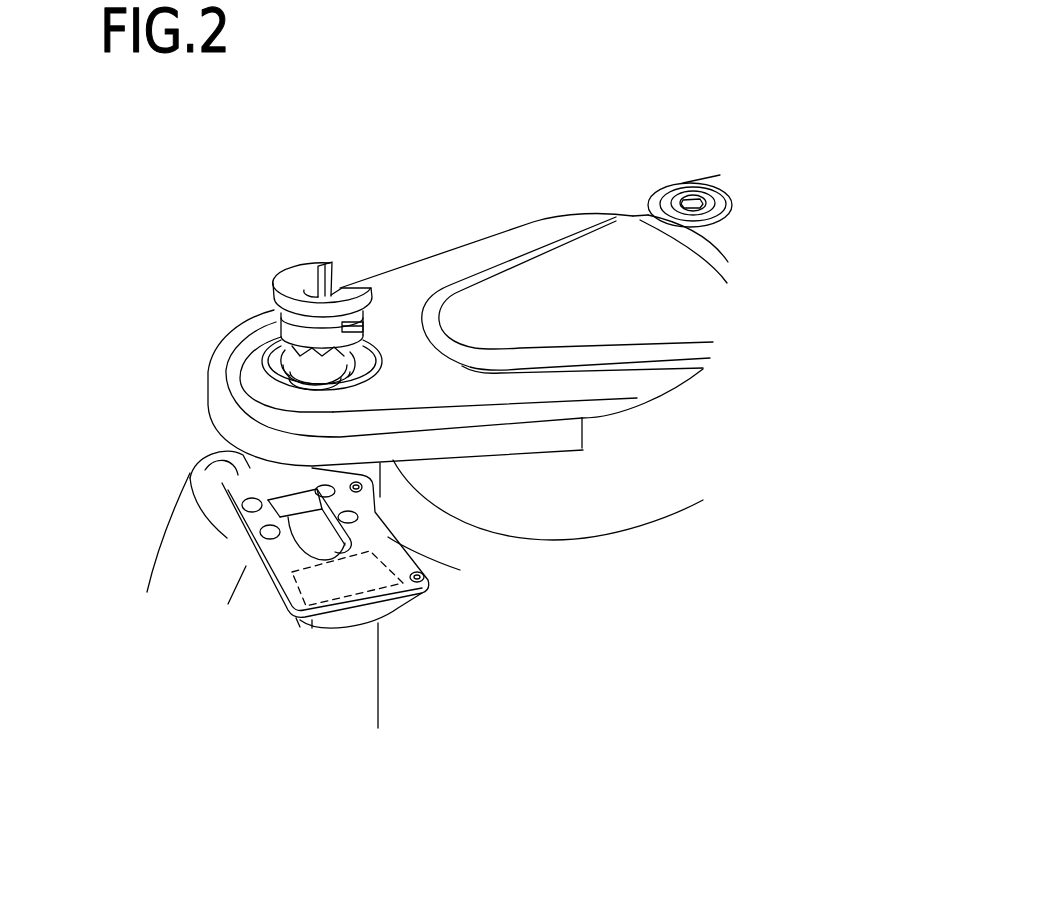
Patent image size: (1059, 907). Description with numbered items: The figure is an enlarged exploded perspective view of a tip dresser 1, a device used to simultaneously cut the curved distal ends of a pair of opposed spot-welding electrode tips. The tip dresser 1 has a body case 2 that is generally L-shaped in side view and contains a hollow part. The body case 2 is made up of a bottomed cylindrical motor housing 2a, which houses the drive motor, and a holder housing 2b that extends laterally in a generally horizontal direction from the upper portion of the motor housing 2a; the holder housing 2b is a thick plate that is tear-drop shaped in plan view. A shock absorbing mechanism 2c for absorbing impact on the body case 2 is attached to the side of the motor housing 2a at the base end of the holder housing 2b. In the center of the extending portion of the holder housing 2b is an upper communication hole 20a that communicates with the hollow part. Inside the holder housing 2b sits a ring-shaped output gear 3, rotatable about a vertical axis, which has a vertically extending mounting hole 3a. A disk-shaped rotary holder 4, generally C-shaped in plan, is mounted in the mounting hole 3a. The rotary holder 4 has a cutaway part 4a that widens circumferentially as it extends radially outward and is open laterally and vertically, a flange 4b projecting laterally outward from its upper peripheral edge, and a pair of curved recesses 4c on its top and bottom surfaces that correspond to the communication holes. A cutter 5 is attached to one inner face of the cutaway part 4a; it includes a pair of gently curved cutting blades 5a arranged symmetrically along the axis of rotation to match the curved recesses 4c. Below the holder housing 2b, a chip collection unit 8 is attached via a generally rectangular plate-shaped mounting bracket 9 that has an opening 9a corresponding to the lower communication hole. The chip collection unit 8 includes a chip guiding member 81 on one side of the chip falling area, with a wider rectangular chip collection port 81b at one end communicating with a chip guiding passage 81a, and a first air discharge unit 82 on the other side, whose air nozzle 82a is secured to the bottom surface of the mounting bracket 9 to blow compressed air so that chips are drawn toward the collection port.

The tip dresser 1 is at (689, 124).
The body case 2 is at (529, 208).
The motor housing 2a is at (374, 708).
The holder housing 2b is at (481, 238).
The shock absorbing mechanism 2c is at (685, 195).
The output gear 3 is at (292, 365).
The mounting hole 3a is at (380, 384).
The rotary holder 4 is at (376, 313).
The cutaway part 4a is at (374, 288).
The flange 4b is at (273, 290).
The curved recesses 4c is at (320, 297).
The cutter 5 is at (320, 280).
The cutting blades 5a is at (340, 286).
The chip collection unit 8 is at (188, 468).
The mounting bracket 9 is at (280, 605).
The opening 9a is at (408, 587).
The upper communication hole 20a is at (296, 372).
The chip guiding member 81 is at (150, 568).
The chip guiding passage 81a is at (388, 537).
The chip collection port 81b is at (238, 548).
The first air discharge unit 82 is at (388, 635).
The air nozzle 82a is at (330, 632).